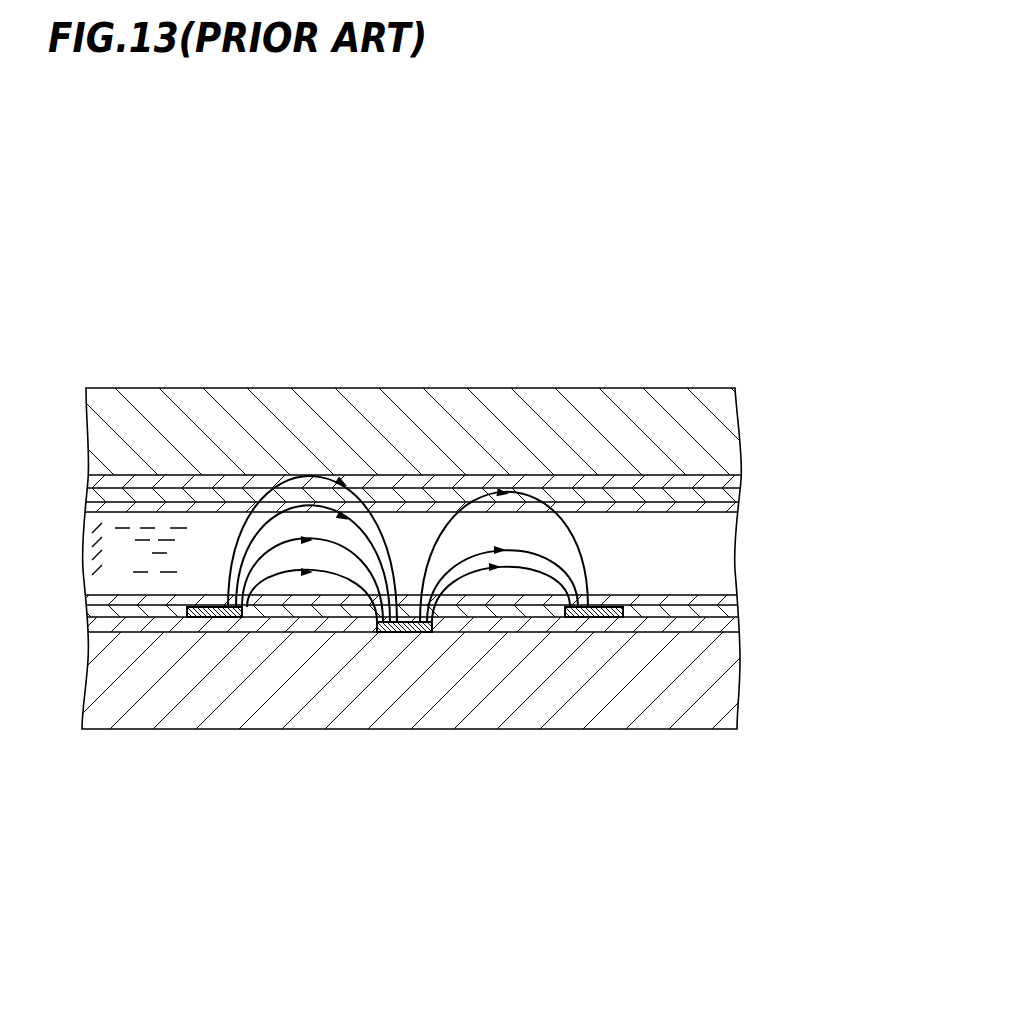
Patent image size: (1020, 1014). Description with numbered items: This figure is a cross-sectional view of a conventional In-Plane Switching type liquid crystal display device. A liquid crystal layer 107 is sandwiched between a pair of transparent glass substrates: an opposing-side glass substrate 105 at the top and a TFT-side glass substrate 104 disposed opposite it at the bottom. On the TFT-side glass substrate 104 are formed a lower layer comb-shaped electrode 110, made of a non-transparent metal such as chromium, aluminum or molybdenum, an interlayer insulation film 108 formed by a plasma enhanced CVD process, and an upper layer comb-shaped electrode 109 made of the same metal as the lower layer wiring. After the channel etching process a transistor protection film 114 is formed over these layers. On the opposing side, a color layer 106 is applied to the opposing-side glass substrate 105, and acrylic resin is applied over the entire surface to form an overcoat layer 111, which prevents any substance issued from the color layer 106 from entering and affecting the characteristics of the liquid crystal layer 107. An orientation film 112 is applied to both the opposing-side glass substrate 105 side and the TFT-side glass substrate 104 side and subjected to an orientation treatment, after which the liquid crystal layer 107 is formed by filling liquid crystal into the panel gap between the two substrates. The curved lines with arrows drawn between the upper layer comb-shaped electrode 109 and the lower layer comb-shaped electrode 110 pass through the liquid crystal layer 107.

The TFT-side glass substrate 104 is at (136, 692).
The opposing-side glass substrate 105 is at (148, 400).
The color layer 106 is at (232, 482).
The liquid crystal layer 107 is at (665, 543).
The interlayer insulation film 108 is at (599, 628).
The upper layer comb-shaped electrode 109 is at (222, 612).
The lower layer comb-shaped electrode 110 is at (407, 640).
The overcoat layer 111 is at (388, 497).
The orientation film 112 is at (580, 510).
The transistor protection film 114 is at (683, 610).